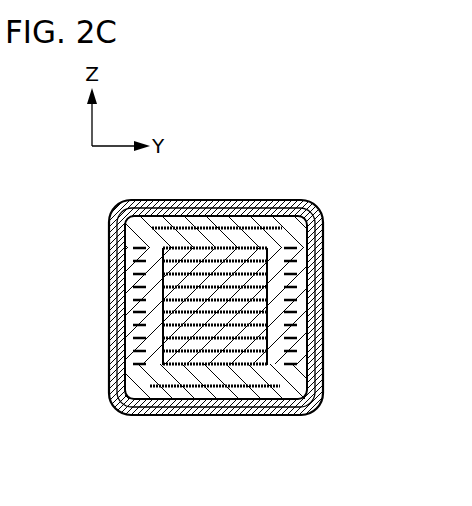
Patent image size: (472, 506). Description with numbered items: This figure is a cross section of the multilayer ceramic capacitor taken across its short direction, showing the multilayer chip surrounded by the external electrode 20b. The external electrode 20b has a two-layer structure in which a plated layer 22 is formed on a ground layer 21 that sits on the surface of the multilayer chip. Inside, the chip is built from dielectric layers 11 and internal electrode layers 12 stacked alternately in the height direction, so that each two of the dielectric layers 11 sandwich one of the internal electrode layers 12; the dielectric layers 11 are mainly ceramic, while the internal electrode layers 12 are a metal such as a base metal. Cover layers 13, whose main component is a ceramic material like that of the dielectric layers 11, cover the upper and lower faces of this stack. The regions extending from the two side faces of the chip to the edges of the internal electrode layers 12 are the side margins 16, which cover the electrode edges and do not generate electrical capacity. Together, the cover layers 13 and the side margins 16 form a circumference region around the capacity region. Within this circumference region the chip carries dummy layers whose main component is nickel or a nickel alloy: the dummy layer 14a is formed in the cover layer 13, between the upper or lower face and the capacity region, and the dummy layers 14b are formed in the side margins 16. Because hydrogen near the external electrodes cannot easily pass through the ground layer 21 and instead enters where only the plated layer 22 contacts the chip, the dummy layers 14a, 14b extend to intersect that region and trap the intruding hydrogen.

The dielectric layer 11 is at (199, 326).
The internal electrode layer 12 is at (242, 313).
The cover layer 13 is at (152, 232).
The dummy layer 14a is at (207, 227).
The dummy layer 14b is at (143, 288).
The side margin 16 is at (115, 312).
The external electrode 20b is at (265, 141).
The ground layer 21 is at (284, 205).
The plated layer 22 is at (241, 210).